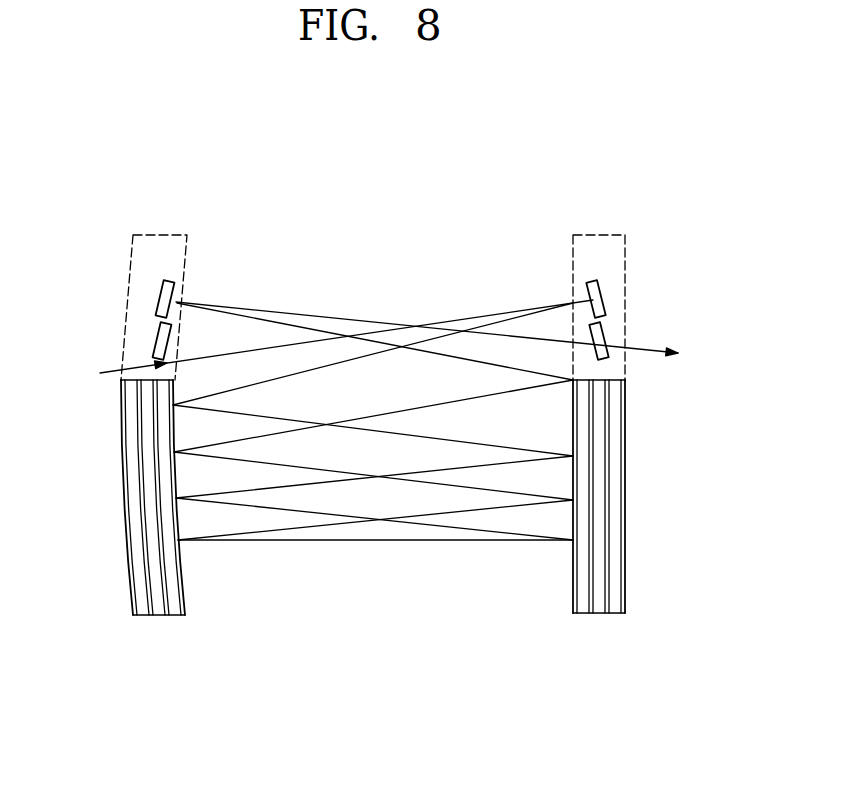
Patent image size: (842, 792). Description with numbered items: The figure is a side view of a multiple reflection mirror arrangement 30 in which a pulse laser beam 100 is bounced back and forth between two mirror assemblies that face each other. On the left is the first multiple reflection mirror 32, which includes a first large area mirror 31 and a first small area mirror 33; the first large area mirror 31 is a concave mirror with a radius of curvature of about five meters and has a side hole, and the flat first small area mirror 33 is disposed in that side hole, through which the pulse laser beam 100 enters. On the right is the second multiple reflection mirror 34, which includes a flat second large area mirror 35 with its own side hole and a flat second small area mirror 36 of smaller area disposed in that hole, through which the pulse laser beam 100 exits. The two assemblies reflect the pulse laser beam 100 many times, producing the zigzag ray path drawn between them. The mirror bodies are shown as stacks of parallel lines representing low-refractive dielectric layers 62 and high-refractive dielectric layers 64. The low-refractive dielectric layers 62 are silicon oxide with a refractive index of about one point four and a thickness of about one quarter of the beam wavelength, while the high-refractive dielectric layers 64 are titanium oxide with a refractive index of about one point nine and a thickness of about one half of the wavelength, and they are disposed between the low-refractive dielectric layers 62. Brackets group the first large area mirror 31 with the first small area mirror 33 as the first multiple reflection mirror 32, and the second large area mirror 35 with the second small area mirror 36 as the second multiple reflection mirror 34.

The optical relay assembly 30 is at (576, 150).
The first large area mirror 31 is at (133, 451).
The first multiple reflection mirror 32 is at (47, 287).
The first small area mirror 33 is at (158, 299).
The second multiple reflection mirror 34 is at (716, 285).
The second large area mirror 35 is at (626, 453).
The second small area mirror 36 is at (603, 297).
The low-refractive dielectric layers 62 is at (168, 616).
The high-refractive dielectric layers 64 is at (176, 616).
The pulse laser beam 100 is at (108, 372).